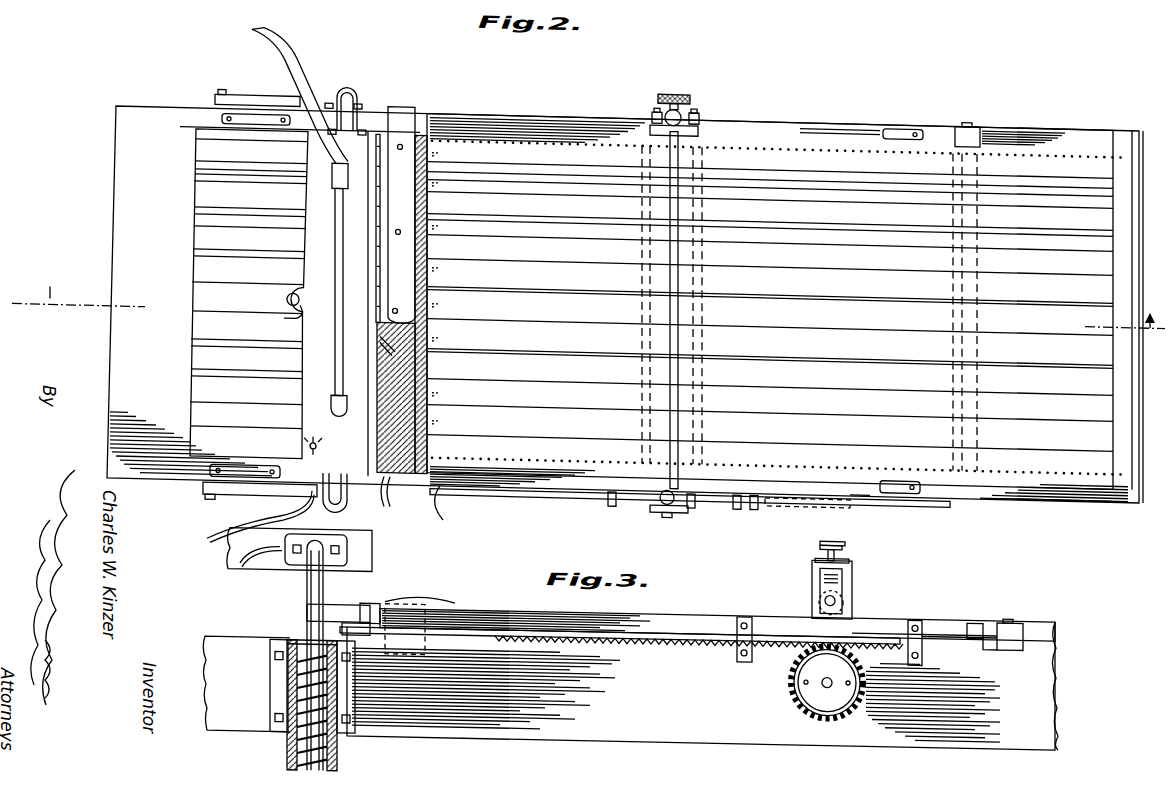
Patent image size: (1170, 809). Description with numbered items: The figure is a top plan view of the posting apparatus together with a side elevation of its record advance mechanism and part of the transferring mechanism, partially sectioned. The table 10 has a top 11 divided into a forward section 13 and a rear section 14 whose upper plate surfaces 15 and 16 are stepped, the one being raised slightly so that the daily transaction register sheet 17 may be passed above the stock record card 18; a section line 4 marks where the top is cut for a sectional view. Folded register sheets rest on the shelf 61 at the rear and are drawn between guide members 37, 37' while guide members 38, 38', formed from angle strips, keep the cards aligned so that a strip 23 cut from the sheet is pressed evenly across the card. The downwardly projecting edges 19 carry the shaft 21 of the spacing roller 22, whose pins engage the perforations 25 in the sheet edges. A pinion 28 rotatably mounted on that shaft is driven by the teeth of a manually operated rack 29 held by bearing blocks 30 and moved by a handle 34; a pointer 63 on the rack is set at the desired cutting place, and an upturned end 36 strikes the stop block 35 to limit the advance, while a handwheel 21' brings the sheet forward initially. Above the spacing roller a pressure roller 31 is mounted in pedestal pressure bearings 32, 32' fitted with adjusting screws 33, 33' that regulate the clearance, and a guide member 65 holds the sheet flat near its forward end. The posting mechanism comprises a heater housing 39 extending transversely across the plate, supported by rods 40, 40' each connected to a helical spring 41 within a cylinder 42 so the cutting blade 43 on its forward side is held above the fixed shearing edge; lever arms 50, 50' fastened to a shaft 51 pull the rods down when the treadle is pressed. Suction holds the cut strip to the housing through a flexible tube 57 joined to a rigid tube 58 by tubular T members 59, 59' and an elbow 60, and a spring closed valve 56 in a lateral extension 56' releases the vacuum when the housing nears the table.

In FIG. 2, the section line 4- 4 is at (583, 296).
In FIG. 2, the table 10 is at (812, 106).
In FIG. 3, the table 10 is at (758, 735).
In FIG. 2, the top 11 is at (757, 108).
In FIG. 3, the top 11 is at (690, 605).
In FIG. 2, the forward section 13 is at (931, 118).
In FIG. 2, the rear section 14 is at (185, 106).
In FIG. 3, the rear section 14 is at (234, 636).
In FIG. 2, the upper plate surface of rear section 15 is at (965, 110).
In FIG. 3, the upper plate surface of rear section 15 is at (1024, 610).
In FIG. 2, the upper plate surface of forward section 16 is at (116, 143).
In FIG. 3, the upper plate surface of forward section 16 is at (250, 636).
In FIG. 2, the daily transaction register sheet 17 is at (1086, 150).
In FIG. 3, the daily transaction register sheet 17 is at (940, 605).
In FIG. 2, the stock record card 18 is at (206, 196).
In FIG. 3, the downwardly projecting edges 19 is at (1010, 733).
In FIG. 2, the shaft 21 is at (669, 531).
In FIG. 3, the shaft 21 is at (798, 703).
In FIG. 2, the handwheel 21' is at (673, 86).
In FIG. 2, the spacing roller 22 is at (700, 122).
In FIG. 3, the strip 23 is at (336, 607).
In FIG. 2, the perforations 25 is at (1055, 131).
In FIG. 3, the pinion 28 is at (790, 676).
In FIG. 2, the rack 29 is at (547, 488).
In FIG. 3, the rack 29 is at (692, 632).
In FIG. 2, the bearing blocks 30 is at (606, 494).
In FIG. 3, the bearing blocks 30 is at (740, 642).
In FIG. 2, the pressure roller 31 is at (679, 303).
In FIG. 3, the pressure roller 31 is at (852, 575).
In FIG. 2, the pedestal pressure bearing 32 is at (705, 516).
In FIG. 3, the pedestal pressure bearing 32 is at (855, 590).
In FIG. 2, the pedestal pressure bearing 32' is at (707, 96).
In FIG. 2, the adjusting screw 33 is at (756, 519).
In FIG. 3, the adjusting screw 33 is at (847, 545).
In FIG. 2, the adjusting screw 33' is at (646, 99).
In FIG. 2, the handle 34 is at (435, 512).
In FIG. 3, the handle 34 is at (372, 640).
In FIG. 2, the stop block 35 is at (756, 494).
In FIG. 3, the stop block 35 is at (975, 608).
In FIG. 2, the upturned end of rack 36 is at (805, 491).
In FIG. 3, the upturned end of rack 36 is at (1000, 626).
In FIG. 2, the guide member 37 is at (981, 505).
In FIG. 2, the guide member 37' is at (861, 117).
In FIG. 2, the guide member 38 is at (245, 451).
In FIG. 2, the guide member 38' is at (234, 98).
In FIG. 2, the heater housing 39 is at (302, 390).
In FIG. 2, the rod 40 is at (277, 507).
In FIG. 3, the rod 40 is at (281, 655).
In FIG. 2, the rod 40' is at (349, 97).
In FIG. 3, the helical spring 41 is at (289, 700).
In FIG. 2, the cylinder 42 is at (402, 100).
In FIG. 3, the cylinder 42 is at (275, 681).
In FIG. 2, the cutting blade 43 is at (421, 140).
In FIG. 3, the cutting blade 43 is at (372, 546).
In FIG. 2, the lever arm 50 is at (249, 506).
In FIG. 2, the lever arm 50' is at (257, 83).
In FIG. 2, the shaft 51 is at (205, 495).
In FIG. 2, the spring closed valve 56 is at (268, 300).
In FIG. 2, the lateral extension 56' is at (280, 320).
In FIG. 2, the tube 57 is at (298, 58).
In FIG. 2, the rigid tube 58 is at (335, 256).
In FIG. 2, the tubular T member 59 is at (392, 356).
In FIG. 2, the tubular T member 59' is at (310, 185).
In FIG. 2, the elbow 60 is at (348, 398).
In FIG. 2, the shelf 61 is at (1080, 479).
In FIG. 2, the pointer 63 is at (388, 492).
In FIG. 3, the pointer 63 is at (380, 602).
In FIG. 2, the guide member 65 is at (452, 125).
In FIG. 3, the guide member 65 is at (456, 596).